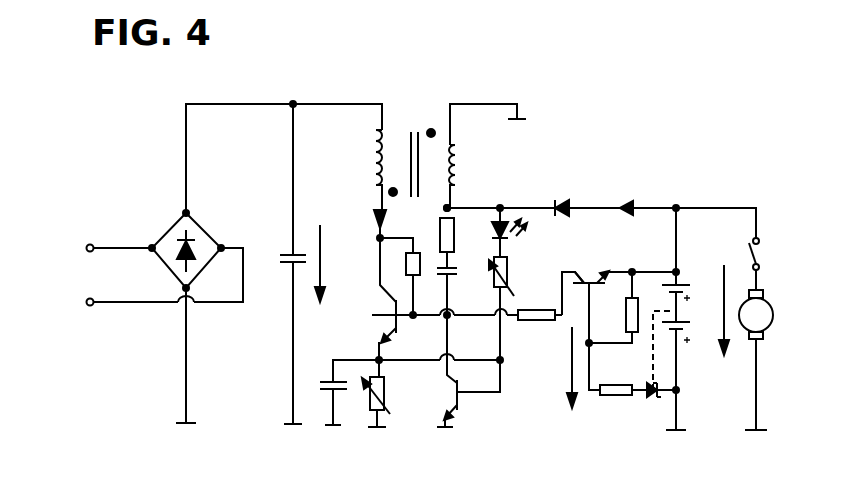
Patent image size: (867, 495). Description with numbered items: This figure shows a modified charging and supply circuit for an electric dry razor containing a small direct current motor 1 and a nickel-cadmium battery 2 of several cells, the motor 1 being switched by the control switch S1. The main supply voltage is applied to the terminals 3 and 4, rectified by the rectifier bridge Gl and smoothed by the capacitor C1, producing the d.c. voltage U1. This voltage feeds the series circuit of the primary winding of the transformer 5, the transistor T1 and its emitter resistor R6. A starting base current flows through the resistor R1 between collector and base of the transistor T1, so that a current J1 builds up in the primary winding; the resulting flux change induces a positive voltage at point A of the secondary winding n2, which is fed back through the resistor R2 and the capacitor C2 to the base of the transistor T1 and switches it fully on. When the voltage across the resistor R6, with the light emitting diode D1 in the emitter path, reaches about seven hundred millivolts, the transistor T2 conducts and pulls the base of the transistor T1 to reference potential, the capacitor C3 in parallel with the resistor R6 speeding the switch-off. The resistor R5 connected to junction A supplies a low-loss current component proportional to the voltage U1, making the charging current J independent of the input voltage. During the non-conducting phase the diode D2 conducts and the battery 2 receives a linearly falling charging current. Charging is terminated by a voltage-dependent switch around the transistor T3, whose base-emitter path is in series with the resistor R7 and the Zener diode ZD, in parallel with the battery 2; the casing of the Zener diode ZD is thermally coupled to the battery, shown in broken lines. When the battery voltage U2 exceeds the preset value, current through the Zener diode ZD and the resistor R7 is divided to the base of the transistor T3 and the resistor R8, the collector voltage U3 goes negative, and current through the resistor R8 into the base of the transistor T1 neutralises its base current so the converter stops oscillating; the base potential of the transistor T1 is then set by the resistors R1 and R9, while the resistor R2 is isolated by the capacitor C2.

The rectifier bridge Gl is at (168, 228).
The terminal 3 is at (109, 249).
The terminal 4 is at (154, 281).
The capacitor C1 is at (290, 254).
The d.c. voltage U1 is at (320, 251).
The transformer 5 is at (412, 134).
The current J1 is at (385, 218).
The secondary winding n2 is at (456, 150).
The point A is at (451, 205).
The diode D2 is at (568, 201).
The charging current J is at (628, 206).
The light emitting diode D1 is at (506, 238).
The resistor R1 is at (406, 262).
The resistor R2 is at (455, 240).
The capacitor C2 is at (452, 272).
The resistor R5 is at (508, 271).
The transistor T1 is at (369, 299).
The resistor R9 is at (540, 320).
The capacitor C3 is at (330, 378).
The resistor R6 is at (384, 393).
The transistor T2 is at (463, 408).
The transistor T3 is at (589, 272).
The collector voltage U3 is at (576, 360).
The resistor R8 is at (626, 313).
The resistor R7 is at (603, 396).
The Zener diode ZD is at (655, 397).
The battery 2 is at (685, 314).
The battery voltage U2 is at (726, 297).
The control switch S1 is at (769, 253).
The direct current motor 1 is at (769, 322).